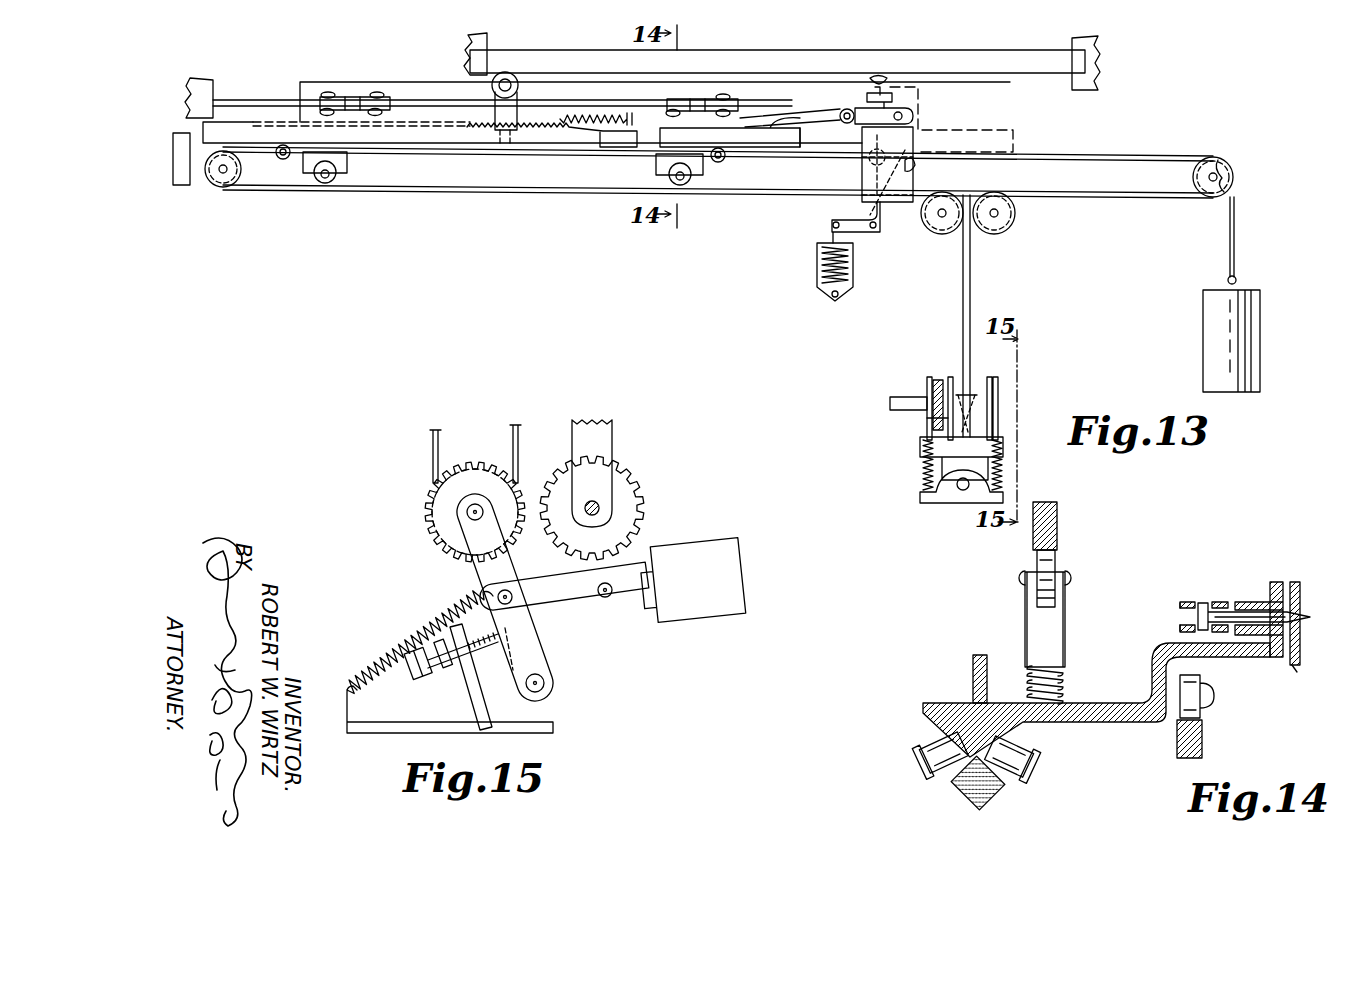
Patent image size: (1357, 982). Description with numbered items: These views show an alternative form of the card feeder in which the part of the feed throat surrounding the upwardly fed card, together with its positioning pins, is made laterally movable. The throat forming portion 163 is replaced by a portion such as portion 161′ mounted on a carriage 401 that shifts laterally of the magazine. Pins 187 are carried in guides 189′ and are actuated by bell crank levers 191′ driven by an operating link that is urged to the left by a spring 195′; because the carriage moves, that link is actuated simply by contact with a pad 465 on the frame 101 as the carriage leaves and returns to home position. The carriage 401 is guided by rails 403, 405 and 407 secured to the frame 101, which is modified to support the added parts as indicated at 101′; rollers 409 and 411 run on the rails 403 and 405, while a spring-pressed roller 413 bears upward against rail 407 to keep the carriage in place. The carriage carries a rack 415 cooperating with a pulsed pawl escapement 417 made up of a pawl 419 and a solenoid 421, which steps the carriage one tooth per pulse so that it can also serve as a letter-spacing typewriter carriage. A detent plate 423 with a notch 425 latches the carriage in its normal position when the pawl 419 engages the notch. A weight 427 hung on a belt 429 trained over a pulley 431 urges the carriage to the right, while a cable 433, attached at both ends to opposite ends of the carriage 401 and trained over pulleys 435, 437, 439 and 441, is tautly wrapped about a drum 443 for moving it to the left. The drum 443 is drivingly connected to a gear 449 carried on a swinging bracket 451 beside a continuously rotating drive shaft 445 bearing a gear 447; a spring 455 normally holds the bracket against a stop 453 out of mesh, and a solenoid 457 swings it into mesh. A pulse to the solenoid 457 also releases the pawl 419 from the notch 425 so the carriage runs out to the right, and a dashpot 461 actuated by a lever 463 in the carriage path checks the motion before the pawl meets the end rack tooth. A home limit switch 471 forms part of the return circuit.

In FIG. 13, the frame 101 is at (189, 75).
In FIG. 13, the modified frame portion 101′ is at (488, 45).
In FIG. 13, the pad 465 is at (210, 90).
In FIG. 13, the guides 189′ is at (335, 92).
In FIG. 14, the guides 189′ is at (1231, 598).
In FIG. 13, the bell crank levers 191′ is at (353, 95).
In FIG. 14, the bell crank levers 191′ is at (1177, 606).
In FIG. 13, the spring 195′ is at (590, 113).
In FIG. 13, the rail 407 is at (738, 60).
In FIG. 14, the rail 407 is at (1059, 530).
In FIG. 13, the spring-pressed roller 413 is at (523, 90).
In FIG. 14, the spring-pressed roller 413 is at (1060, 566).
In FIG. 13, the rack 415 is at (420, 142).
In FIG. 13, the carriage 401 is at (501, 148).
In FIG. 14, the carriage 401 is at (1133, 684).
In FIG. 13, the rollers 411 is at (338, 173).
In FIG. 14, the rollers 411 is at (925, 746).
In FIG. 13, the pulley 435 is at (228, 188).
In FIG. 13, the home limit switch 471 is at (178, 188).
In FIG. 13, the notch 425 is at (730, 134).
In FIG. 13, the plate 423 is at (800, 137).
In FIG. 14, the plate 423 is at (972, 670).
In FIG. 13, the pawl 419 is at (835, 110).
In FIG. 13, the pulsed pawl escapement 417 is at (939, 129).
In FIG. 13, the solenoid 421 is at (862, 182).
In FIG. 13, the lever 463 is at (920, 172).
In FIG. 13, the dashpot 461 is at (854, 268).
In FIG. 13, the pulley 437 is at (947, 236).
In FIG. 13, the pulley 439 is at (1001, 235).
In FIG. 13, the cable 433 is at (974, 290).
In FIG. 15, the cable 433 is at (432, 456).
In FIG. 13, the pulley 441 is at (1193, 179).
In FIG. 13, the pulley 431 is at (1231, 163).
In FIG. 13, the belt 429 is at (1240, 234).
In FIG. 13, the weight 427 is at (1261, 322).
In FIG. 13, the swinging bracket 451 is at (1004, 396).
In FIG. 15, the swinging bracket 451 is at (541, 633).
In FIG. 13, the gear 447 is at (936, 380).
In FIG. 15, the gear 447 is at (624, 486).
In FIG. 13, the drive shaft 445 is at (900, 393).
In FIG. 15, the drive shaft 445 is at (604, 502).
In FIG. 13, the drum 443 is at (977, 388).
In FIG. 15, the drum 443 is at (425, 515).
In FIG. 13, the gear 449 is at (928, 420).
In FIG. 15, the gear 449 is at (474, 466).
In FIG. 13, the spring 455 is at (922, 469).
In FIG. 15, the spring 455 is at (418, 621).
In FIG. 13, the stop 453 is at (960, 490).
In FIG. 15, the stop 453 is at (418, 680).
In FIG. 14, the rail 405 is at (956, 805).
In FIG. 14, the rollers 409 is at (1200, 677).
In FIG. 14, the rail 403 is at (1202, 740).
In FIG. 14, the pins 187 is at (1300, 605).
In FIG. 14, the throat forming portion 163 is at (1295, 672).
In FIG. 14, the throat forming portion 161′ is at (1270, 584).
In FIG. 15, the solenoid 457 is at (698, 614).